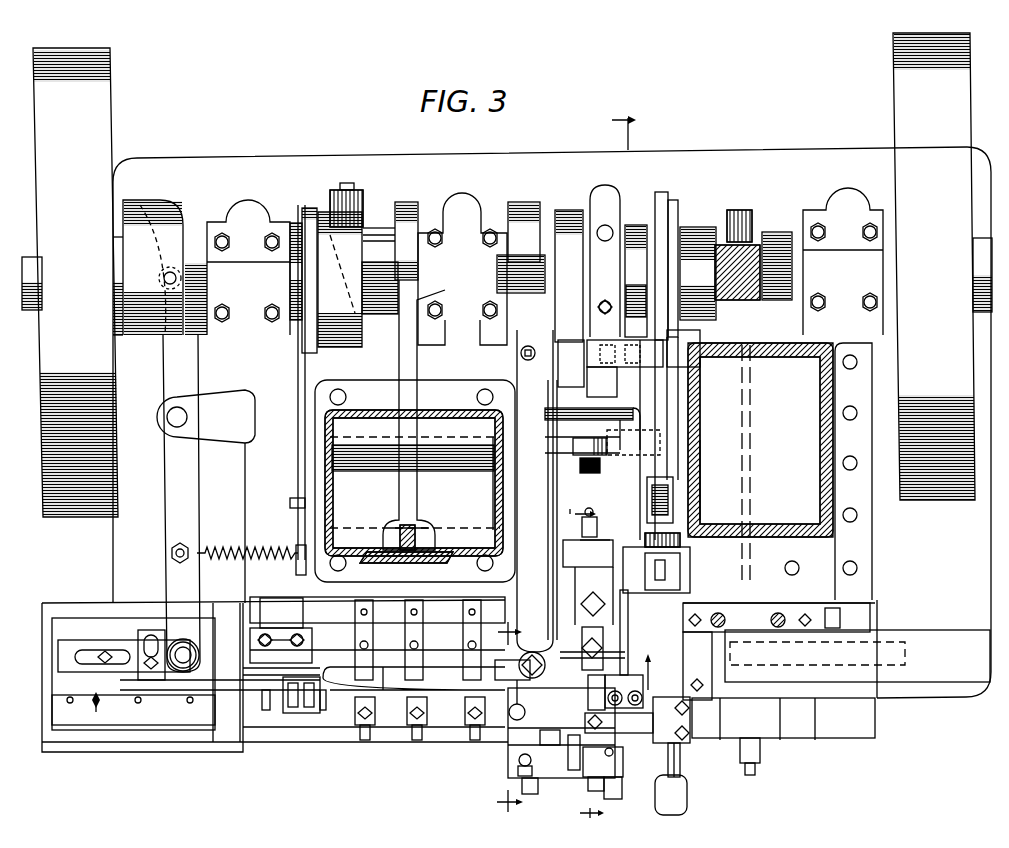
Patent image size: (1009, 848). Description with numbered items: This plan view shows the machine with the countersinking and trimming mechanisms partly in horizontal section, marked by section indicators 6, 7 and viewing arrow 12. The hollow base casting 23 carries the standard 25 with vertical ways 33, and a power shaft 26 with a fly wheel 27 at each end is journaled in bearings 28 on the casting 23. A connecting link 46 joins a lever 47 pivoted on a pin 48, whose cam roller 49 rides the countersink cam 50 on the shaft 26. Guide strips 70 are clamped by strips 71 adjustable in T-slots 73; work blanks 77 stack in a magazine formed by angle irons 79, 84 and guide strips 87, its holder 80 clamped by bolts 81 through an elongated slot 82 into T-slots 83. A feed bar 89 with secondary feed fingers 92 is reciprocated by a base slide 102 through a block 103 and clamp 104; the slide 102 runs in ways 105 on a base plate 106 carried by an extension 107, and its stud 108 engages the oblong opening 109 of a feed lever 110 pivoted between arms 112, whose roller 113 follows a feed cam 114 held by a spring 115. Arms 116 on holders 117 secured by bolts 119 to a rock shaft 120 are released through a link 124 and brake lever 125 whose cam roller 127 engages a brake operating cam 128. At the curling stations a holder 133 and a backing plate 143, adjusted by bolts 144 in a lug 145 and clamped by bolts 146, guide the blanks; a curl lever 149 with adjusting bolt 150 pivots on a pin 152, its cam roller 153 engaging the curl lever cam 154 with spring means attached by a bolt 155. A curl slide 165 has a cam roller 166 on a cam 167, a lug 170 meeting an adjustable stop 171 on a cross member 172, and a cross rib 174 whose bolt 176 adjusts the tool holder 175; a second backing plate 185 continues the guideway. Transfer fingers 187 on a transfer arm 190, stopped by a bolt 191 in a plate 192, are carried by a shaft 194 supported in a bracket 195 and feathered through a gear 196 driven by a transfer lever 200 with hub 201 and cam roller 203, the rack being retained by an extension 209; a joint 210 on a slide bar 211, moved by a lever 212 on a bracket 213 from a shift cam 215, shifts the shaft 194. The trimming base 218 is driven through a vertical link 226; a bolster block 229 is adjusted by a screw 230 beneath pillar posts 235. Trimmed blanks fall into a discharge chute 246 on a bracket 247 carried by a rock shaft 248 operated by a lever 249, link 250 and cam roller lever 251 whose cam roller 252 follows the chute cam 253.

The section line 6- 6 is at (503, 717).
The section line 7- 7 is at (582, 663).
The direction arrow 12 is at (616, 133).
The base casting 23 is at (767, 160).
The vertical standard 25 is at (325, 476).
The power shaft 26 is at (975, 258).
The fly wheel 27 is at (42, 357).
The bearings 28 is at (250, 222).
The vertical ways 33 is at (358, 545).
The vertical connecting link 46 is at (415, 525).
The lever 47 is at (399, 362).
The horizontal pin 48 is at (298, 458).
The cam roller 49 is at (405, 243).
The countersink cam 50 is at (385, 200).
The guide strips 70 is at (445, 700).
The strips 71 is at (418, 742).
The transverse T-slots 73 is at (368, 742).
The work blanks 77 is at (308, 714).
The angle iron 79 is at (322, 712).
The holder 80 is at (281, 658).
The bolts 81 is at (273, 621).
The elongated slot 82 is at (288, 628).
The transverse T-slots 83 is at (268, 628).
The angle iron 84 is at (266, 712).
The narrow guide strips 87 is at (292, 714).
The feed bar 89 is at (226, 745).
The secondary feed fingers 92 is at (381, 680).
The base slide 102 is at (60, 683).
The block 103 is at (70, 668).
The clamp 104 is at (160, 632).
The ways 105 is at (68, 632).
The base plate 106 is at (58, 718).
The extension 107 is at (62, 744).
The stud 108 is at (182, 672).
The oblong opening 109 is at (185, 642).
The feed lever 110 is at (167, 543).
The vertically spaced arms 112 is at (212, 400).
The roller 113 is at (238, 200).
The feed cam 114 is at (145, 205).
The spring 115 is at (252, 552).
The arms 116 is at (410, 630).
The holders 117 is at (373, 598).
The bolts 119 is at (420, 598).
The horizontal rock shaft 120 is at (430, 612).
The link 124 is at (296, 568).
The brake lever 125 is at (300, 503).
The cam roller 127 is at (305, 290).
The brake operating cam 128 is at (308, 208).
The holder 133 is at (548, 780).
The backing plate 143 is at (545, 705).
The bolts 144 is at (568, 762).
The upstanding lug 145 is at (556, 745).
The bolts 146 is at (510, 716).
The curl lever 149 is at (540, 492).
The bolt 150 is at (524, 655).
The pin 152 is at (525, 612).
The cam roller 153 is at (522, 255).
The curl lever cam 154 is at (518, 200).
The bolt 155 is at (510, 354).
The curl slide 165 is at (615, 640).
The cam roller 166 is at (566, 343).
The cam 167 is at (570, 267).
The lug 170 is at (594, 473).
The adjustable stop 171 is at (585, 452).
The cross member 172 is at (565, 440).
The cross rib 174 is at (598, 540).
The tool holder 175 is at (588, 582).
The bolt 176 is at (590, 514).
The second backing plate 185 is at (630, 676).
The transfer fingers 187 is at (615, 692).
The transfer arm 190 is at (648, 740).
The bolt 191 is at (612, 800).
The plate 192 is at (595, 792).
The shaft 194 is at (682, 760).
The bracket 195 is at (688, 795).
The gear 196 is at (690, 545).
The transfer lever 200 is at (616, 442).
The elongated hub 201 is at (592, 420).
The cam roller 203 is at (628, 297).
The extension 209 is at (633, 225).
The joint 210 is at (672, 510).
The slide bar 211 is at (672, 455).
The lever 212 is at (678, 342).
The bracket 213 is at (607, 225).
The shift cam 215 is at (664, 195).
The base 218 is at (855, 548).
The vertical link 226 is at (770, 235).
The bolster block 229 is at (830, 722).
The screw 230 is at (760, 770).
The pillar posts 235 is at (790, 614).
The discharge chute 246 is at (950, 630).
The bracket 247 is at (900, 700).
The rock shaft 248 is at (752, 490).
The lever 249 is at (742, 212).
The link 250 is at (685, 227).
The cam roller lever 251 is at (365, 198).
The cam roller 252 is at (368, 212).
The chute cam 253 is at (342, 190).